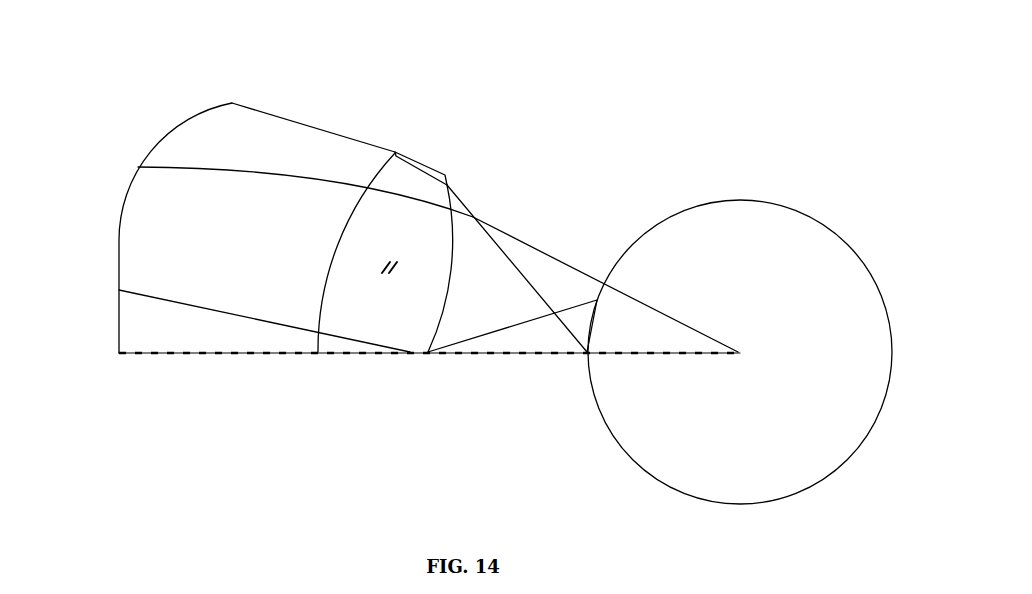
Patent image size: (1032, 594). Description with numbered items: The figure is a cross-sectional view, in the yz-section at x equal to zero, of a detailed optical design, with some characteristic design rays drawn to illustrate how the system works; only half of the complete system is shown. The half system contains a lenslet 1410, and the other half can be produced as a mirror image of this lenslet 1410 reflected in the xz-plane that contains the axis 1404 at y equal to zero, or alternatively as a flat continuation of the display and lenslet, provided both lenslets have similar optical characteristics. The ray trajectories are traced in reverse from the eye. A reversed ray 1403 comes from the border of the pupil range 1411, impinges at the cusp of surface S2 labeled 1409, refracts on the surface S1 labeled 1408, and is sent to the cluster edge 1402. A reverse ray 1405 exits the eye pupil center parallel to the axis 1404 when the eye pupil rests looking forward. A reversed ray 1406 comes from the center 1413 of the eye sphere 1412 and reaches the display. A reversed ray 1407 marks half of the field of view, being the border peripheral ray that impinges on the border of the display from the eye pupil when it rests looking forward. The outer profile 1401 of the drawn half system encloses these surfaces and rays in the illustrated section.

The vehicle body front profile 1401 is at (122, 206).
The cluster edge 1402 is at (118, 353).
The reversed ray 1403 is at (187, 353).
The axis 1404 is at (270, 353).
The reverse ray 1405 is at (180, 300).
The reversed ray 1406 is at (199, 168).
The reversed ray 1407 is at (276, 117).
The surface S1 1408 is at (340, 243).
The cusp of surface S2 1409 is at (450, 263).
The lenslet 1410 is at (408, 157).
The pupil range 1411 is at (597, 300).
The eye sphere 1412 is at (802, 213).
The center of the eye sphere 1413 is at (738, 352).